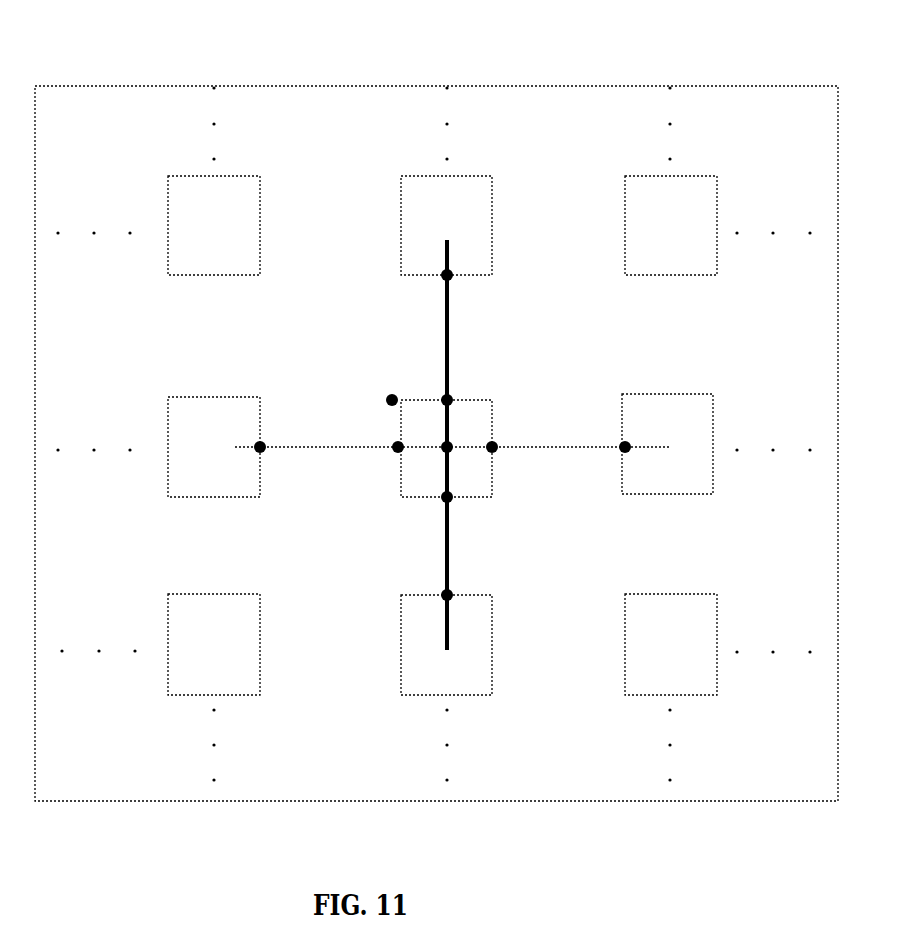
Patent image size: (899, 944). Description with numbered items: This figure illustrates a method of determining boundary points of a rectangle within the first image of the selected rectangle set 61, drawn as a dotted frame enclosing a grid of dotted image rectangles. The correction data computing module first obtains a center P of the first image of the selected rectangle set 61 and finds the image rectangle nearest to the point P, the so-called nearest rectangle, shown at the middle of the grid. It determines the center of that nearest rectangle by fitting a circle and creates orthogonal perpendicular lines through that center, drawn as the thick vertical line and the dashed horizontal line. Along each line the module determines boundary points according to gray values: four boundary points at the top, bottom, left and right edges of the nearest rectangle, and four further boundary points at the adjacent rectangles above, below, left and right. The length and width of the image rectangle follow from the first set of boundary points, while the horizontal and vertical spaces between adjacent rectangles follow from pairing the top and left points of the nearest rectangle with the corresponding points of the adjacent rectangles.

The selected rectangle set 61 is at (683, 86).
The center of the first image P is at (389, 386).